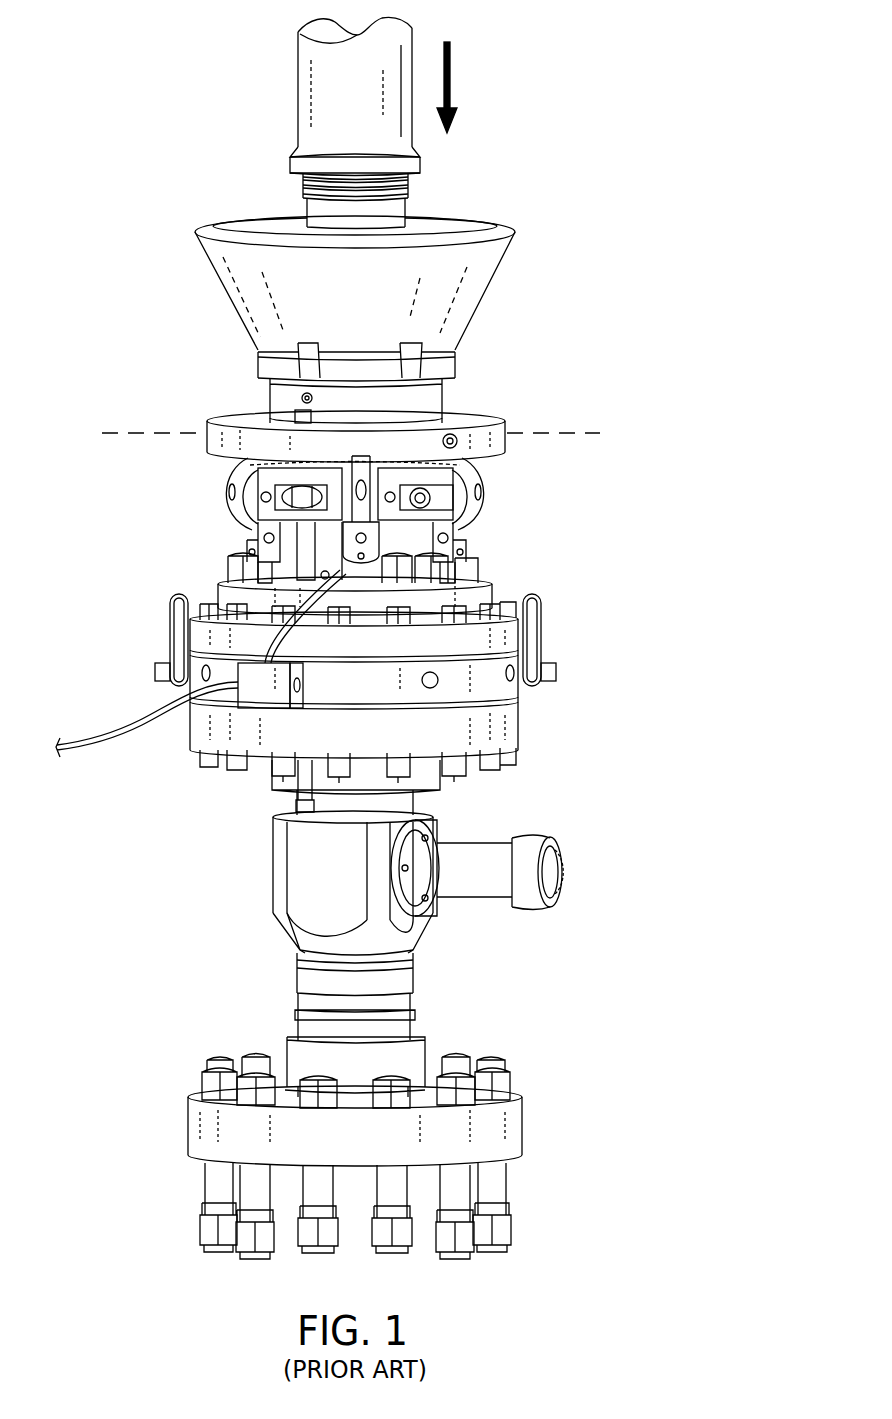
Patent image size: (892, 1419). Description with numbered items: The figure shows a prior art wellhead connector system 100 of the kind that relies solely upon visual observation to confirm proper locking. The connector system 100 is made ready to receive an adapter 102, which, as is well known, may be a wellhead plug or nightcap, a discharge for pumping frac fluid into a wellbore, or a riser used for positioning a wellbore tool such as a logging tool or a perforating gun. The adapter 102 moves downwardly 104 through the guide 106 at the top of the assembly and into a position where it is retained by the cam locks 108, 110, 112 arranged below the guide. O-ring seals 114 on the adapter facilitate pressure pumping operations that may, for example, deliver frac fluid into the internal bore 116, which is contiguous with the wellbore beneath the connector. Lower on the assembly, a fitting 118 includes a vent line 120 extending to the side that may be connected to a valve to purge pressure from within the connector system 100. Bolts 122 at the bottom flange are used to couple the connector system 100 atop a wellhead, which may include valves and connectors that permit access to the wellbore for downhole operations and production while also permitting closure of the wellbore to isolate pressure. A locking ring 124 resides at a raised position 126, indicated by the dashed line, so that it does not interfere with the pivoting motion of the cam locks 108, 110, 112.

The connector system 100 is at (517, 174).
The adapter 102 is at (298, 92).
The downward movement 104 is at (452, 76).
The guide 106 is at (222, 292).
The cam lock 108 is at (226, 508).
The cam lock 110 is at (360, 470).
The cam lock 112 is at (490, 505).
The O-ring seals 114 is at (278, 198).
The internal bore 116 is at (355, 1232).
The fitting 118 is at (272, 868).
The vent line 120 is at (487, 900).
The bolts 122 is at (205, 1188).
The locking ring 124 is at (487, 417).
The raised position 126 is at (134, 432).